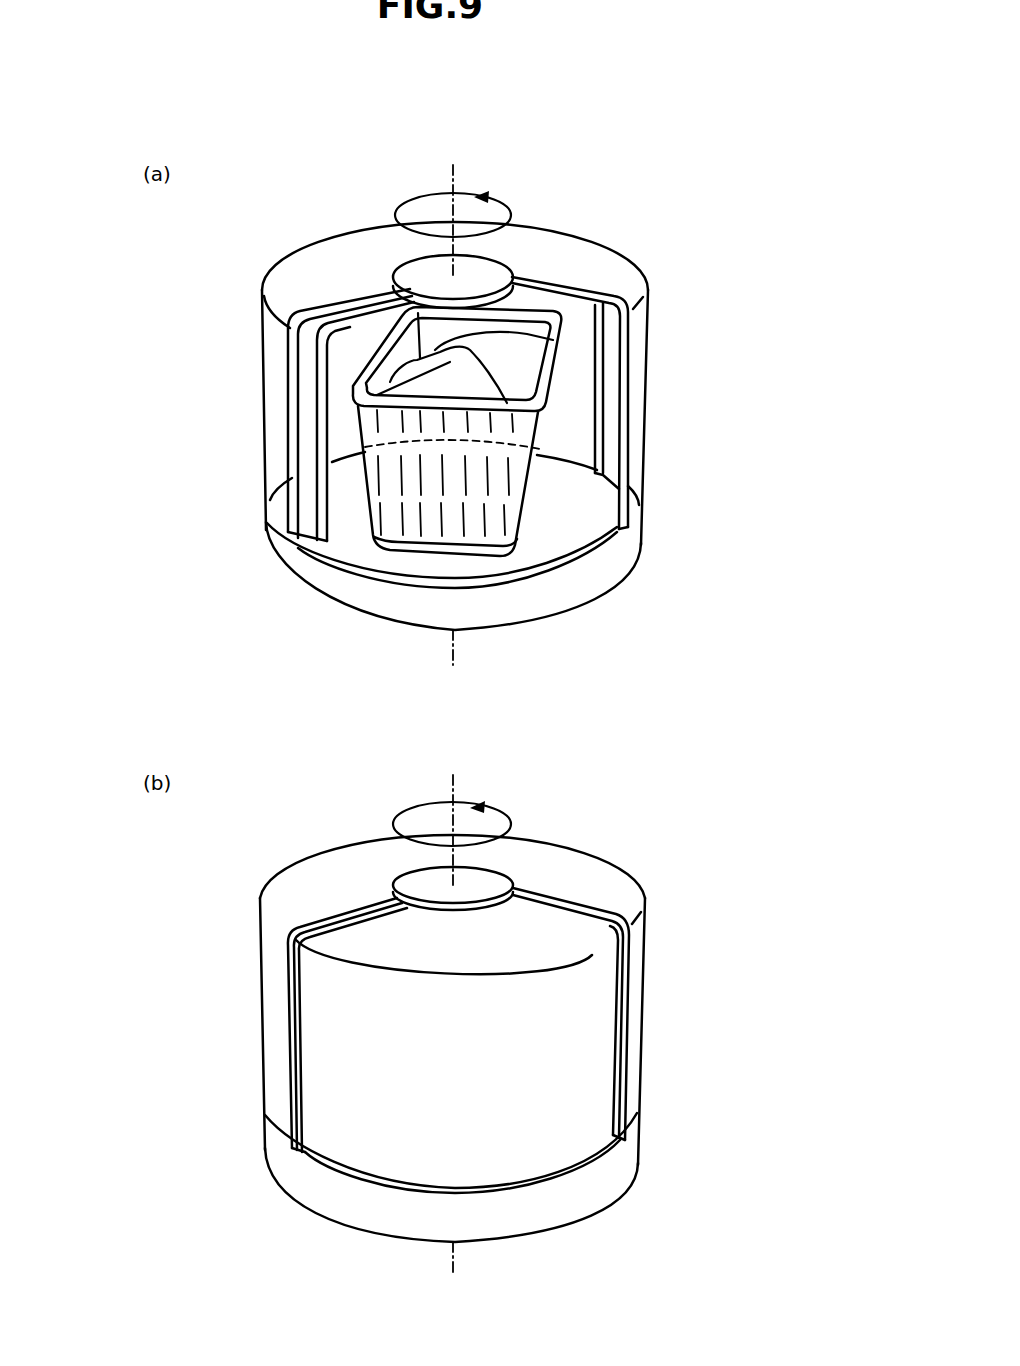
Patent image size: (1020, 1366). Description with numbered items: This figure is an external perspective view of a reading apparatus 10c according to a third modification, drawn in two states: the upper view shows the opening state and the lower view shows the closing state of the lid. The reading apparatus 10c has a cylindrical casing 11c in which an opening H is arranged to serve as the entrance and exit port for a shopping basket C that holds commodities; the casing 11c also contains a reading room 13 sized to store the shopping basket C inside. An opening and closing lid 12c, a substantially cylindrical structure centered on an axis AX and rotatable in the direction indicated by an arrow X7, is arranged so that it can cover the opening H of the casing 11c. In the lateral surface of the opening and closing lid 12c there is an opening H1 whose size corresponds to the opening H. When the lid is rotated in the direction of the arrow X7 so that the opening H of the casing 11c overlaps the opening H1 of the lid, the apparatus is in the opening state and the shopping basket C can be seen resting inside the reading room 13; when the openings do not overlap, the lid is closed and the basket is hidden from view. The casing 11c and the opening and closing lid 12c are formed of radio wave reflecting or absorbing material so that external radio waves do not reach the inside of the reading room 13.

The reading apparatus 10c is at (660, 252).
The casing 11c is at (272, 353).
The opening and closing lid 12c is at (307, 416).
The reading room 13 is at (572, 386).
The opening H is at (316, 456).
The opening H1 is at (345, 487).
The shopping basket C is at (503, 545).
The axis AX is at (450, 707).
The arrow X7 is at (456, 510).